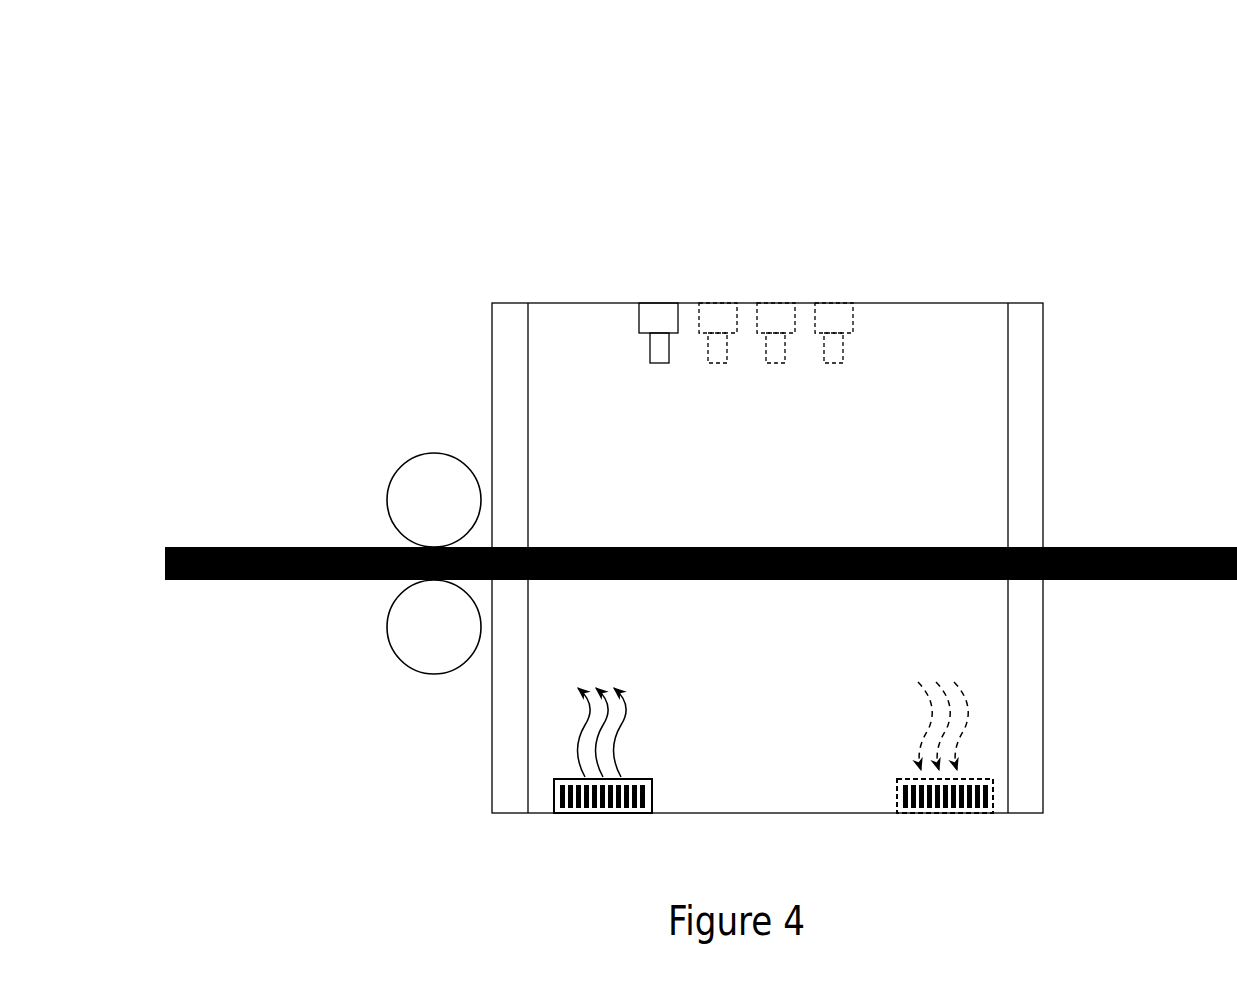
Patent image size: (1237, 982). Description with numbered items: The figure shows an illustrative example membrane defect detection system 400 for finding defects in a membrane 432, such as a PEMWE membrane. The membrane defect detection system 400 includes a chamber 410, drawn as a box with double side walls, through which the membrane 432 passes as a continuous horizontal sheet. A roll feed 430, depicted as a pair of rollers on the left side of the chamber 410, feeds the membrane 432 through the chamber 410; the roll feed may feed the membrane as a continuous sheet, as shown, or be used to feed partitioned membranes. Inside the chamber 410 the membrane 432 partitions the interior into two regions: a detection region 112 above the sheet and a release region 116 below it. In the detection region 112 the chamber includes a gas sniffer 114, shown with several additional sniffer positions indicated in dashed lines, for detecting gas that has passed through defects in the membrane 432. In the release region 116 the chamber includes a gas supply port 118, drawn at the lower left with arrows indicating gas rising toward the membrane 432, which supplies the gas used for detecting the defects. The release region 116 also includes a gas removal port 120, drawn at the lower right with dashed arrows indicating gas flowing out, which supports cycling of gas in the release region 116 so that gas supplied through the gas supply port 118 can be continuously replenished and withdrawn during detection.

The membrane defect detection system 400 is at (420, 73).
The chamber 410 is at (493, 277).
The detection region 112 is at (976, 337).
The gas sniffer 114 is at (636, 316).
The release region 116 is at (976, 625).
The gas supply port 118 is at (653, 771).
The gas removal port 120 is at (891, 767).
The roll feed 430 is at (411, 443).
The membrane 432 is at (602, 541).